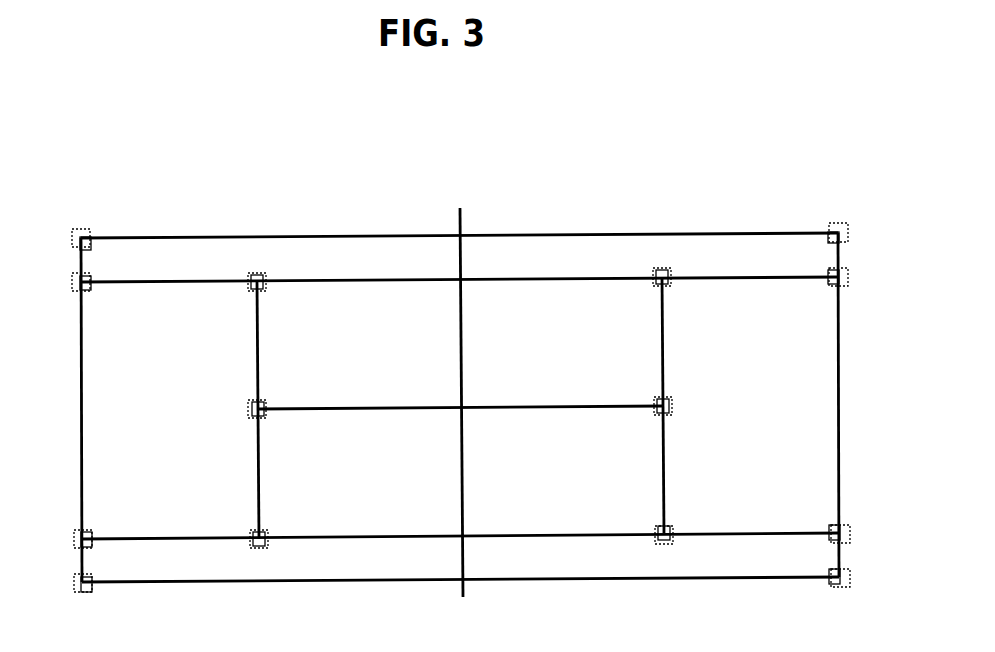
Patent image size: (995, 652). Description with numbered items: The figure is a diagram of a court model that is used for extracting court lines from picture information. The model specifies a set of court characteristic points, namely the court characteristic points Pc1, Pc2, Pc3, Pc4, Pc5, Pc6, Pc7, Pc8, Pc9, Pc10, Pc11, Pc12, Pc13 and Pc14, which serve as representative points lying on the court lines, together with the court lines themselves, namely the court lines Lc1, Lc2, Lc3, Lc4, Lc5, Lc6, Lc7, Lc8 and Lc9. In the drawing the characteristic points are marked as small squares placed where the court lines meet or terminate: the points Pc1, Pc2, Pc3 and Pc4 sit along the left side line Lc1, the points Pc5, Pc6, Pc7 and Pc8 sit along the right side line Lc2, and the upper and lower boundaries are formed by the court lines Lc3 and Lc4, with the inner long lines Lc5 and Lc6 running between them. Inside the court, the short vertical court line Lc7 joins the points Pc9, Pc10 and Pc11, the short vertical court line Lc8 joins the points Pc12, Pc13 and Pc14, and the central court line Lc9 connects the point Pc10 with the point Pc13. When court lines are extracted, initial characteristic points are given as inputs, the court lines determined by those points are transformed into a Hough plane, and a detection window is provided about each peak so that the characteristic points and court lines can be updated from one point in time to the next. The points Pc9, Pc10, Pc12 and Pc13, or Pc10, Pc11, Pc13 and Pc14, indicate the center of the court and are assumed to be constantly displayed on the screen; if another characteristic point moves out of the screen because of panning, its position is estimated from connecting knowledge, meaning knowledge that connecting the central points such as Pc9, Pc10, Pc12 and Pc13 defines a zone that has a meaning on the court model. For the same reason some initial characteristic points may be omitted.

The court characteristic point Pc1 is at (55, 243).
The court characteristic point Pc2 is at (55, 284).
The court characteristic point Pc3 is at (57, 540).
The court characteristic point Pc4 is at (57, 585).
The court characteristic point Pc5 is at (862, 237).
The court characteristic point Pc6 is at (862, 277).
The court characteristic point Pc7 is at (862, 534).
The court characteristic point Pc8 is at (862, 579).
The court characteristic point Pc9 is at (231, 292).
The court characteristic point Pc10 is at (233, 409).
The court characteristic point Pc11 is at (234, 527).
The court characteristic point Pc12 is at (688, 288).
The court characteristic point Pc13 is at (689, 404).
The court characteristic point Pc14 is at (690, 524).
The court line Lc1 is at (57, 410).
The court line Lc2 is at (862, 405).
The court line Lc3 is at (459, 222).
The court line Lc4 is at (460, 594).
The court line Lc5 is at (459, 293).
The court line Lc6 is at (460, 523).
The court line Lc7 is at (278, 410).
The court line Lc8 is at (640, 405).
The court line Lc9 is at (460, 421).